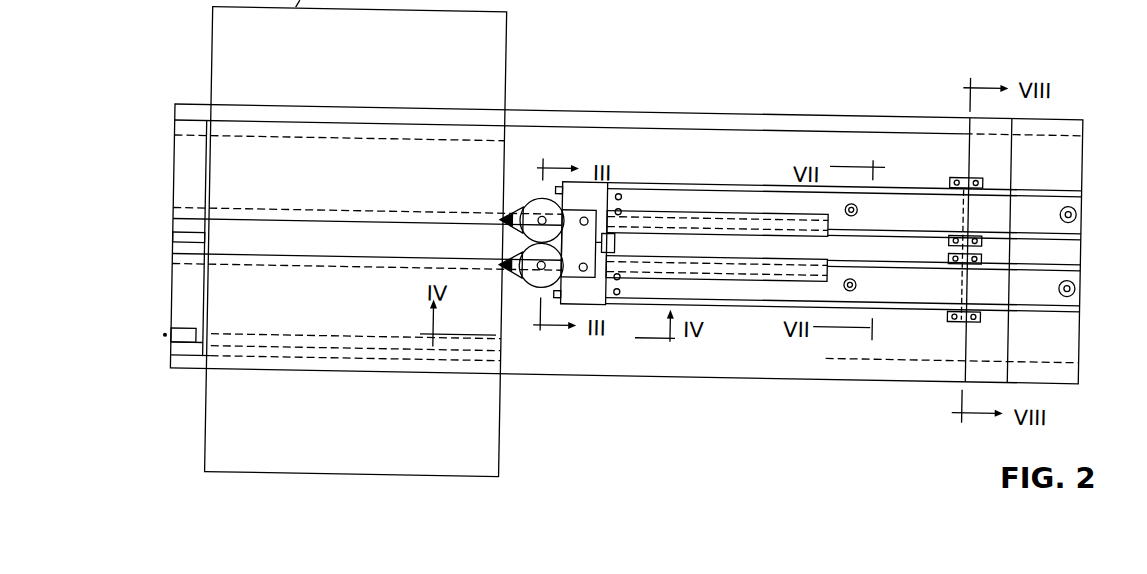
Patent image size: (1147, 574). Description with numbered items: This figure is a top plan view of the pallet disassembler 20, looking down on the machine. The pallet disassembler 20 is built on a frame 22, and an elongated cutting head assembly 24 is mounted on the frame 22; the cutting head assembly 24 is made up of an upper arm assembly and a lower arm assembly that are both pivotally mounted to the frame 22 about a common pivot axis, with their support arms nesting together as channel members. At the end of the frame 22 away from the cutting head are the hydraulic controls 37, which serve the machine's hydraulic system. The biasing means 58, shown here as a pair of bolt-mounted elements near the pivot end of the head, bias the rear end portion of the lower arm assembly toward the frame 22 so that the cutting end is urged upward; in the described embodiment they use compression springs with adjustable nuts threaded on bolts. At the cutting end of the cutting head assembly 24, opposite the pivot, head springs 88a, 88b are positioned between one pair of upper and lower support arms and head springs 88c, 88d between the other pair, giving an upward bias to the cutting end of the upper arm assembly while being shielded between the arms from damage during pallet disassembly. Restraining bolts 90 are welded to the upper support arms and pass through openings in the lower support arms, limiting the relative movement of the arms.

The pallet disassembler 20 is at (627, 196).
The frame 22 is at (629, 92).
The cutting head assembly 24 is at (845, 194).
The hydraulic controls 37 is at (161, 375).
The biasing means 58 is at (1099, 246).
The head spring 88a is at (655, 178).
The head spring 88b is at (657, 204).
The head spring 88c is at (672, 259).
The head spring 88d is at (670, 289).
The restraining bolt 90 is at (890, 250).